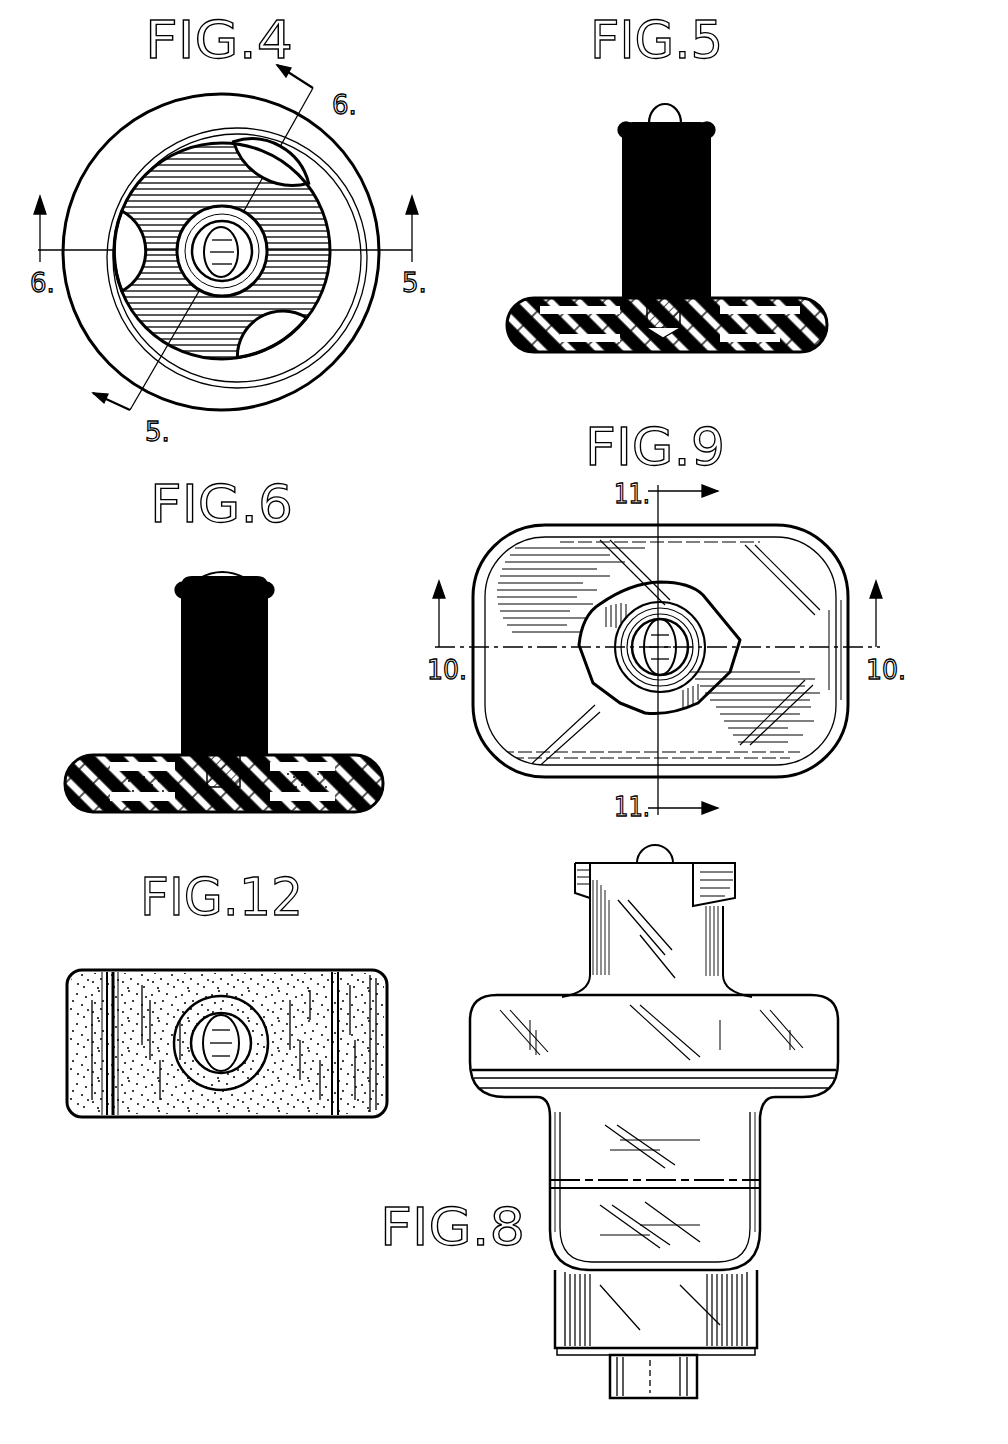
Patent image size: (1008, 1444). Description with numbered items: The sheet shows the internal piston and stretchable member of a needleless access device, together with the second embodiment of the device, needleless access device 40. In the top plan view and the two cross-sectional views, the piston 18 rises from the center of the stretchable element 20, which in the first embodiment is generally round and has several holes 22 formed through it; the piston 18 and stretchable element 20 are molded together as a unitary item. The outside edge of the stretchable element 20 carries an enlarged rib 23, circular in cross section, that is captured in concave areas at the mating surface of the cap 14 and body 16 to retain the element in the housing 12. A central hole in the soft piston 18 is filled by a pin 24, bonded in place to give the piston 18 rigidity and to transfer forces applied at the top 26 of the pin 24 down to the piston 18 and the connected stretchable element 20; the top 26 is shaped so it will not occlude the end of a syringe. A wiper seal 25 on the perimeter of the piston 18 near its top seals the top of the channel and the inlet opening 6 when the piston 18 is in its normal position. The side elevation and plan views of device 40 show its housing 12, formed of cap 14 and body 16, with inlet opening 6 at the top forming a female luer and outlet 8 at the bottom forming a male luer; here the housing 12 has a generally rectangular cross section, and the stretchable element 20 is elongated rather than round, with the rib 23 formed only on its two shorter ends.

In FIG. 9, the inlet opening 6 is at (700, 588).
In FIG. 8, the inlet opening 6 is at (682, 863).
In FIG. 8, the outlet 8 is at (690, 1376).
In FIG. 9, the housing 12 is at (490, 547).
In FIG. 8, the housing 12 is at (597, 1145).
In FIG. 9, the cap 14 is at (770, 730).
In FIG. 8, the cap 14 is at (761, 1000).
In FIG. 8, the body 16 is at (740, 1228).
In FIG. 4, the piston 18 is at (212, 293).
In FIG. 5, the piston 18 is at (708, 242).
In FIG. 6, the piston 18 is at (183, 677).
In FIG. 9, the piston 18 is at (628, 690).
In FIG. 12, the piston 18 is at (247, 1015).
In FIG. 4, the stretchable element 20 is at (310, 233).
In FIG. 5, the stretchable element 20 is at (747, 333).
In FIG. 6, the stretchable element 20 is at (285, 767).
In FIG. 12, the stretchable element 20 is at (307, 1110).
In FIG. 4, the holes 22 is at (283, 173).
In FIG. 6, the holes 22 is at (142, 790).
In FIG. 5, the rib 23 is at (523, 302).
In FIG. 6, the rib 23 is at (80, 765).
In FIG. 12, the rib 23 is at (93, 1000).
In FIG. 5, the pin 24 is at (623, 198).
In FIG. 6, the pin 24 is at (262, 632).
In FIG. 5, the wiper seal 25 is at (712, 130).
In FIG. 6, the wiper seal 25 is at (273, 587).
In FIG. 4, the top of pin 26 is at (277, 280).
In FIG. 5, the top of pin 26 is at (670, 106).
In FIG. 6, the top of pin 26 is at (205, 577).
In FIG. 9, the top of pin 26 is at (645, 620).
In FIG. 12, the top of pin 26 is at (225, 1072).
In FIG. 8, the top of pin 26 is at (648, 858).
In FIG. 9, the needleless access device 40 is at (833, 733).
In FIG. 8, the needleless access device 40 is at (765, 1128).